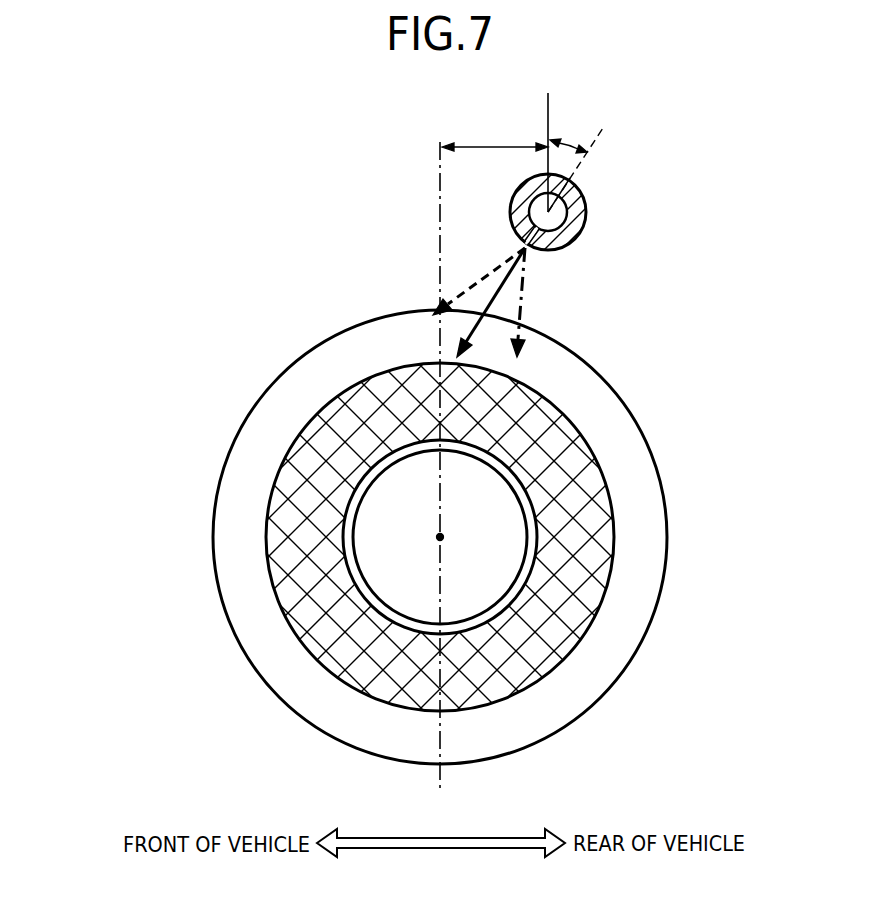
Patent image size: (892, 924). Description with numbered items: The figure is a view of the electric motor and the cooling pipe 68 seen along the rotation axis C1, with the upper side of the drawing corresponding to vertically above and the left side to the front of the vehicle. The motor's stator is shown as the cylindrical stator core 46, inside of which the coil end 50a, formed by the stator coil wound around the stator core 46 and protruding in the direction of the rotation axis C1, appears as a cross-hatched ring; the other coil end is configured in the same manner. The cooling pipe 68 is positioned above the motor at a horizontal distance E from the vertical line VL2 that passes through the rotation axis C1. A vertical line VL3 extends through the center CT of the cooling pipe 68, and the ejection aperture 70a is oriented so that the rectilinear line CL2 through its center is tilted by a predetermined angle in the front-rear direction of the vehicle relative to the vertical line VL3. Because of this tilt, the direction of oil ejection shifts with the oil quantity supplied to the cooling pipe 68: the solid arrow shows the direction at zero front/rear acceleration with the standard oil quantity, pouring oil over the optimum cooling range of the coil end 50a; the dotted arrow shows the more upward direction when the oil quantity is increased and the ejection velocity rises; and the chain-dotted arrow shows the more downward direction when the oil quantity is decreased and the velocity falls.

The stator core 46 is at (622, 427).
The coil end 50a is at (573, 537).
The cooling pipe 68 is at (597, 253).
The ejection aperture 70a is at (530, 243).
The rotation axis C1 is at (440, 537).
The center of the cooling pipe CT is at (550, 212).
The vertical line VL2 is at (440, 256).
The vertical line VL3 is at (548, 95).
The rectilinear line CL2 is at (587, 158).
The distance E is at (495, 137).